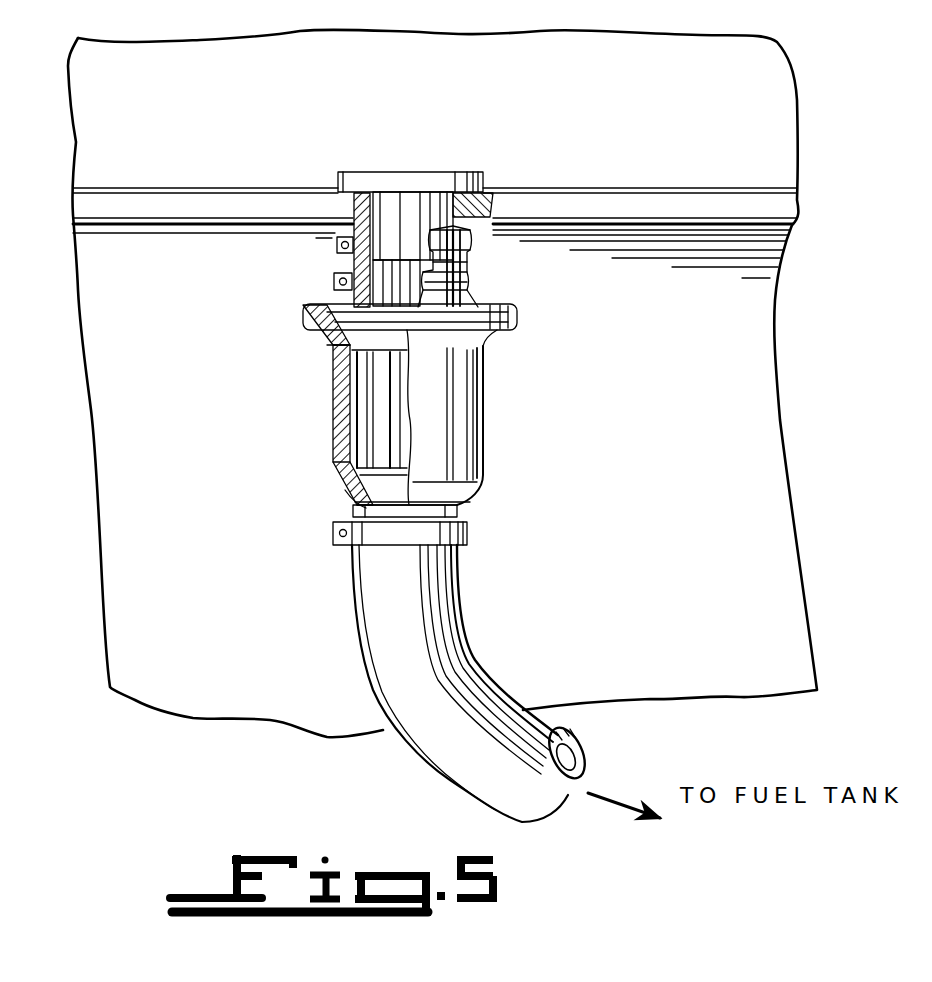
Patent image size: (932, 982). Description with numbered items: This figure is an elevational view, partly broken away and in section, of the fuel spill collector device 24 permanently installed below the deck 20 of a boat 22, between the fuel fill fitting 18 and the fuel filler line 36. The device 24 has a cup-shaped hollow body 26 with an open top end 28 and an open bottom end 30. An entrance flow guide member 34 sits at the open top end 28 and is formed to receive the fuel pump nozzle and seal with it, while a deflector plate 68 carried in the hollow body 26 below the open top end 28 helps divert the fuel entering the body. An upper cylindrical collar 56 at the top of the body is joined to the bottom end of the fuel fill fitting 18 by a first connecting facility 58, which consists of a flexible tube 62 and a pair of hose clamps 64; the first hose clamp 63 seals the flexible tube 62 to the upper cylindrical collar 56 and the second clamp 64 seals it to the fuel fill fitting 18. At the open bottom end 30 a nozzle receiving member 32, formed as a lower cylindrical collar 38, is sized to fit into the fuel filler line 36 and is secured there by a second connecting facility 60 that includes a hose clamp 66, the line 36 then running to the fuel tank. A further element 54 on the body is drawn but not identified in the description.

The fuel fill fitting 18 is at (440, 172).
The deck 20 is at (657, 202).
The boat 22 is at (800, 140).
The fuel spill collector device 24 is at (401, 398).
The hollow body 26 is at (487, 392).
The open top end 28 is at (326, 343).
The open bottom end 30 is at (337, 466).
The nozzle receiving member 32 is at (349, 504).
The entrance flow guide member 34 is at (352, 262).
The fuel filler line 36 is at (493, 683).
The lower cylindrical collar 38 is at (459, 504).
The outer shell 54 is at (487, 442).
The upper cylindrical collar 56 is at (336, 306).
The first connecting facility 58 is at (469, 265).
The second connecting facility 60 is at (335, 547).
The flexible tube 62 is at (463, 274).
The first hose clamp 63 is at (514, 326).
The hose clamps 64 is at (472, 232).
The hose clamp 66 is at (468, 547).
The deflector plate 68 is at (333, 368).